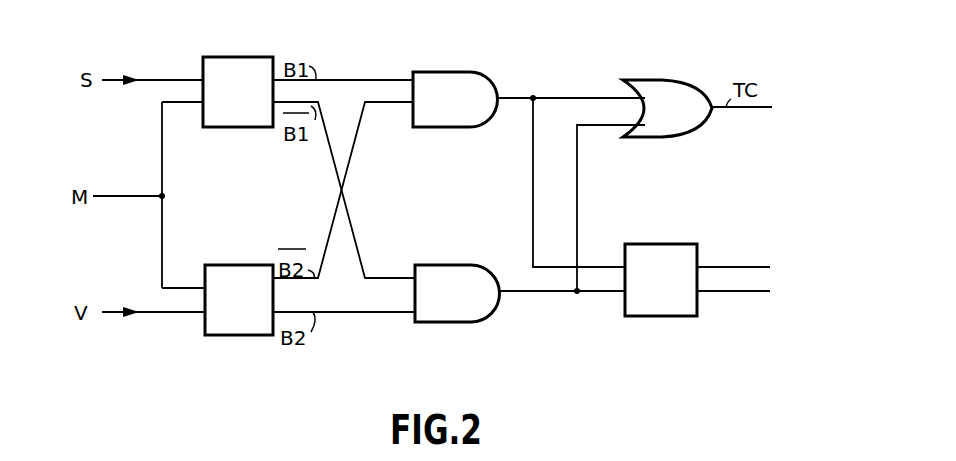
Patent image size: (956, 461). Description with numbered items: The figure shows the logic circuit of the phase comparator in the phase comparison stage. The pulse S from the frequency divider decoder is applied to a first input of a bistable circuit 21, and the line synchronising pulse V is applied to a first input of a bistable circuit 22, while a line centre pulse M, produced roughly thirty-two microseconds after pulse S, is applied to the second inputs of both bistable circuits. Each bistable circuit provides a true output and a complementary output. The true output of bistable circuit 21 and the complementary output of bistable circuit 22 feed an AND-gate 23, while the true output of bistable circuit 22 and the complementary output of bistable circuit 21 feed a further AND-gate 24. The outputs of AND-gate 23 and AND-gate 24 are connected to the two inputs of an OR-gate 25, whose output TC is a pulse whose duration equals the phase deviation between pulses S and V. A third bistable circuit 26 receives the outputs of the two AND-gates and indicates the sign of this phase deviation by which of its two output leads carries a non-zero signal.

The bistable circuit 21 is at (236, 62).
The bistable circuit 22 is at (236, 318).
The AND-gate 23 is at (441, 86).
The further AND-gate 24 is at (444, 298).
The OR-gate 25 is at (654, 100).
The third bistable circuit 26 is at (653, 298).